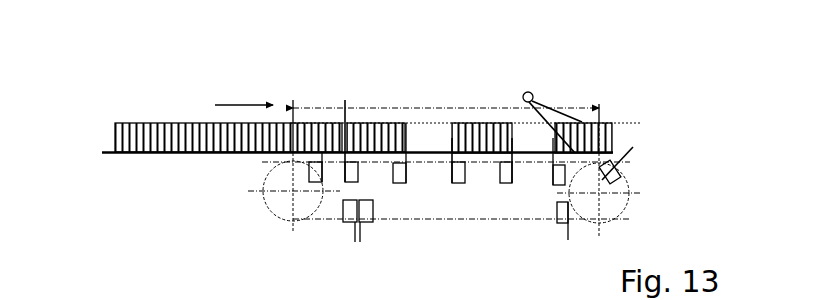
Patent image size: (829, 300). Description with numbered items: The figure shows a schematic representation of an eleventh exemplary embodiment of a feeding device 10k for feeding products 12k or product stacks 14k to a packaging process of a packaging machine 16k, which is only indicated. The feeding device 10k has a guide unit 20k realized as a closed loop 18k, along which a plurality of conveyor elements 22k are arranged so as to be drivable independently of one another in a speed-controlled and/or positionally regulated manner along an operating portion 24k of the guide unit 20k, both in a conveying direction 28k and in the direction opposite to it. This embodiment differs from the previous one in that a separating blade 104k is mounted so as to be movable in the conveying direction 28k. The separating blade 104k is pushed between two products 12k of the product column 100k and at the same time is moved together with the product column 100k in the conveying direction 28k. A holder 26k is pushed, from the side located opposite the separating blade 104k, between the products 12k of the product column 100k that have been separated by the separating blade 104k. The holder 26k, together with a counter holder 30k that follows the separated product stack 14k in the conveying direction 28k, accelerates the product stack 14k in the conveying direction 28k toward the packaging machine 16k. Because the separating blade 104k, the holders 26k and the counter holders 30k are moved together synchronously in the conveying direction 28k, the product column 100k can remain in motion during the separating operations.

The feeding device 10k is at (657, 140).
The products 12k is at (175, 123).
The product stack 14k is at (470, 122).
The packaging machine 16k is at (608, 117).
The closed loop 18k is at (389, 222).
The guide unit 20k is at (255, 212).
The conveyor elements 22k is at (457, 183).
The operating portion 24k is at (563, 108).
The holder 26k is at (452, 143).
The conveying direction 28k is at (240, 103).
The counter holder 30k is at (512, 143).
The product column 100k is at (138, 118).
The separating blade 104k is at (346, 108).